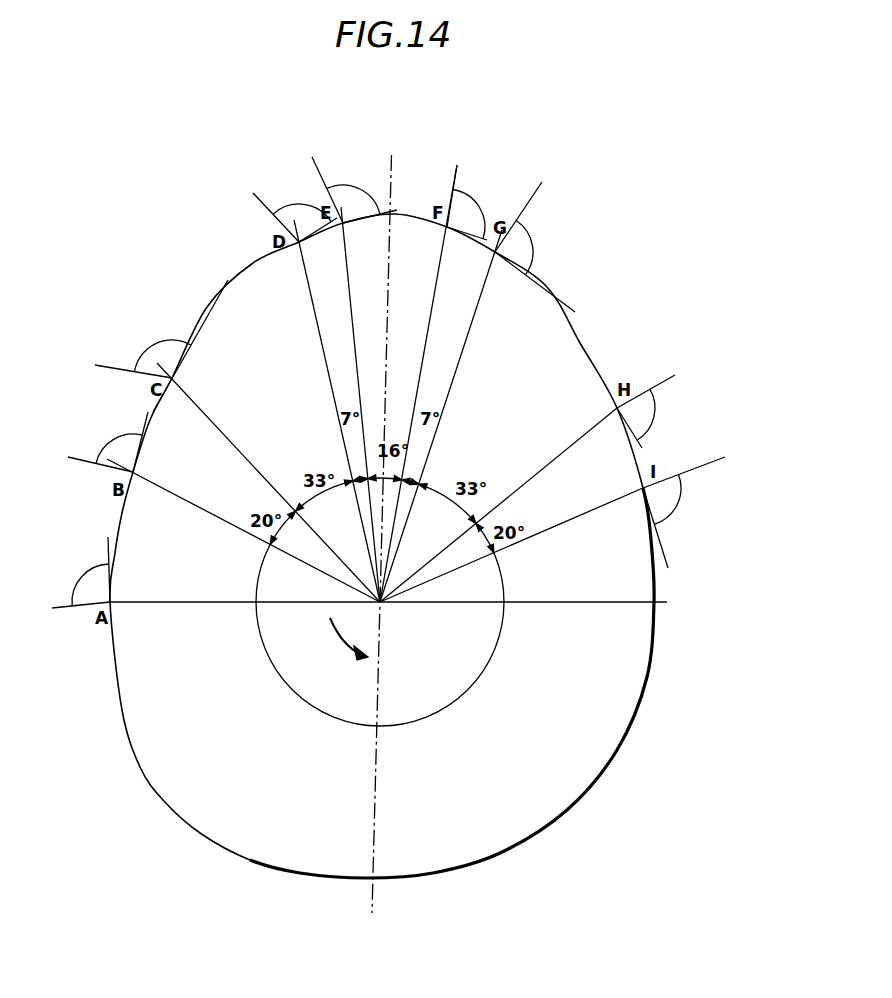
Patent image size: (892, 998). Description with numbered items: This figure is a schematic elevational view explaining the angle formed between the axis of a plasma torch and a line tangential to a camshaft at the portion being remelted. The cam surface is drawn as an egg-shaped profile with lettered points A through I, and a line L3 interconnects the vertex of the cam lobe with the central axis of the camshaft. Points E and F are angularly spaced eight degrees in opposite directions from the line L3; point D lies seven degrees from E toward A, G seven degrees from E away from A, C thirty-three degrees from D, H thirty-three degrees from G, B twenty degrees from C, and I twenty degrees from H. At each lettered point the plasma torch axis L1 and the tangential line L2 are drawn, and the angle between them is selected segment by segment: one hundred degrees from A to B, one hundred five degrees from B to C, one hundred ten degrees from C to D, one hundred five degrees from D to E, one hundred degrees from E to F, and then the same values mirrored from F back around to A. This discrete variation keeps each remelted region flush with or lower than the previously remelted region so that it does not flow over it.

The plasma torch axis L1 is at (60, 607).
The tangential line L2 is at (108, 542).
The line interconnecting the vertex of the cam lobe and the central axis of the cams L3 is at (388, 352).